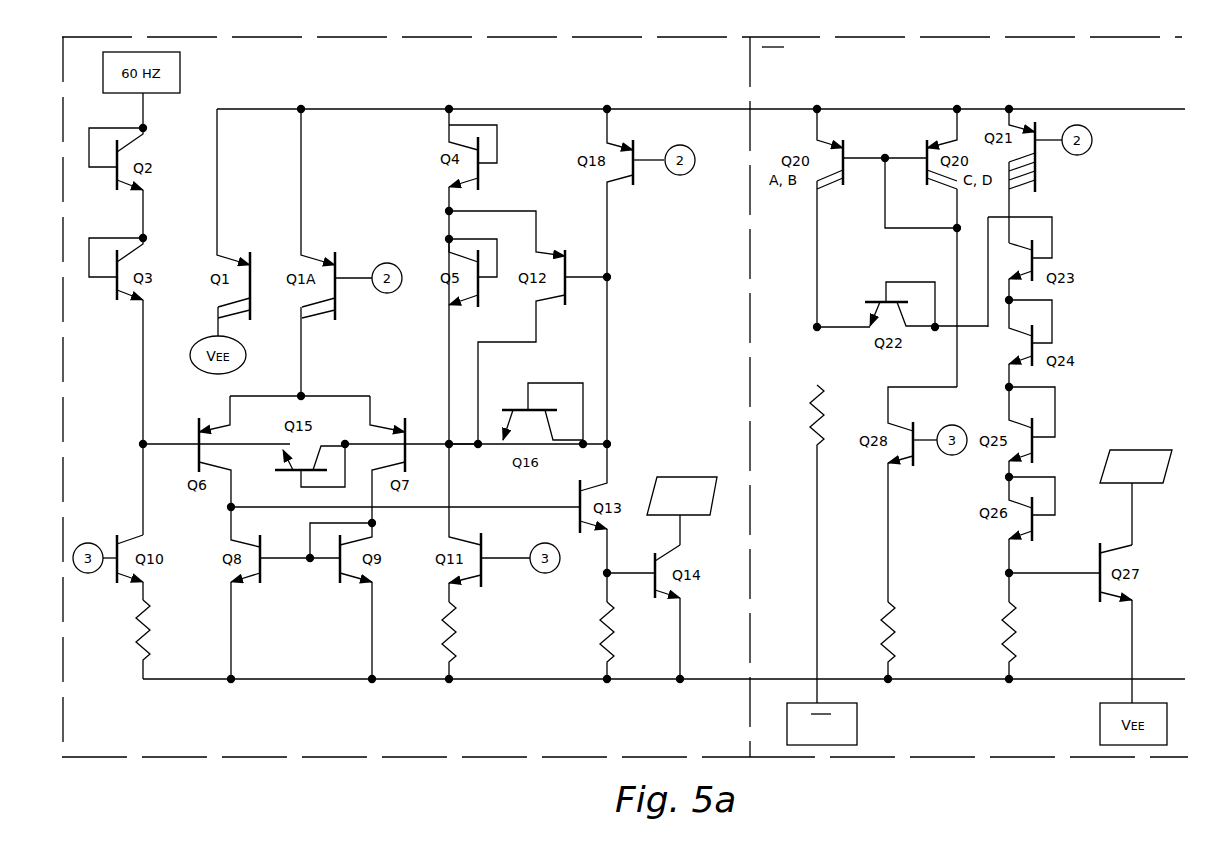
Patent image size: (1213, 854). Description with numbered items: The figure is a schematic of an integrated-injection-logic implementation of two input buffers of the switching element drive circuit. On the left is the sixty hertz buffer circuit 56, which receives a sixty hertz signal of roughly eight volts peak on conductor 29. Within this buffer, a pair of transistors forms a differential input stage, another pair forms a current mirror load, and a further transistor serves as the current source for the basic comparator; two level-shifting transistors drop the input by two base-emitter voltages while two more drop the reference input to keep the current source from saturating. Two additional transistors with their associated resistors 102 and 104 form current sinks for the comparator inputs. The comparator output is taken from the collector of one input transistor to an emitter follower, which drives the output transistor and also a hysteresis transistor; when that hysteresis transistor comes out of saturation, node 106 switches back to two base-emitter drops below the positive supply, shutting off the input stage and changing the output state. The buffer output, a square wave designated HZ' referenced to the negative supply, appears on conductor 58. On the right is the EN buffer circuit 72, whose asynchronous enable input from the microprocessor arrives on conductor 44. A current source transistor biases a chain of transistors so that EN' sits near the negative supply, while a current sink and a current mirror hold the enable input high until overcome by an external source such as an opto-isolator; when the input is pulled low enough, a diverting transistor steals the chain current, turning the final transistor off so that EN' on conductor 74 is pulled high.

The 60 hertz buffer circuit 56 is at (289, 36).
The EN buffer circuit 72 is at (899, 36).
The conductor 29 is at (144, 109).
The resistor 102 is at (141, 641).
The resistor 104 is at (461, 643).
The node 106 is at (450, 447).
The conductor 58 is at (686, 515).
The conductor 44 is at (817, 668).
The conductor 74 is at (1133, 522).